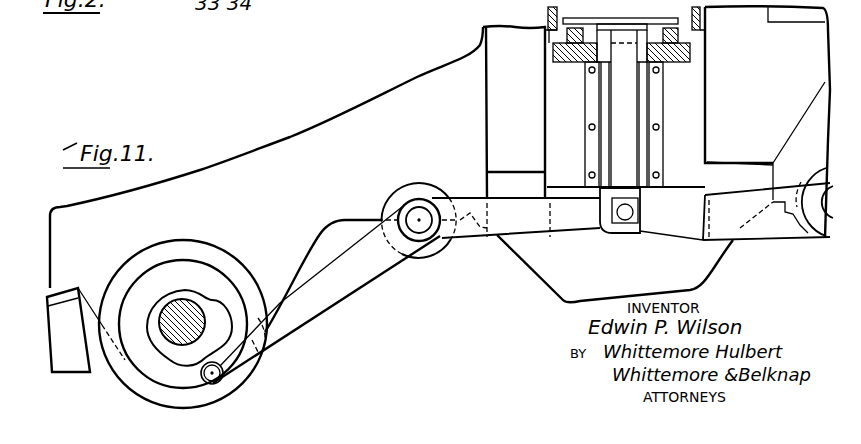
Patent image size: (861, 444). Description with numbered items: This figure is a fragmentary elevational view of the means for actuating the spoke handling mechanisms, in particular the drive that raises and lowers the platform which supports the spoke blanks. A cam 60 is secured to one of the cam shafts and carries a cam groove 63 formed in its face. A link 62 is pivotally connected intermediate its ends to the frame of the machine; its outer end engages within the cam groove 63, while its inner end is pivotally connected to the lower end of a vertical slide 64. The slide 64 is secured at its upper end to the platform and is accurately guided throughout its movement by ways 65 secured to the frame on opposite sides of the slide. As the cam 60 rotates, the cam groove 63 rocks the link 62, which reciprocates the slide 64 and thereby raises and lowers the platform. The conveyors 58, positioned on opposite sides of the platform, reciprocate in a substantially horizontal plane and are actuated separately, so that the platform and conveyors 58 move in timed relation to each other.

The conveyors 58 is at (557, 47).
The cam 60 is at (231, 260).
The link 62 is at (372, 273).
The cam groove 63 is at (244, 330).
The vertical slide 64 is at (623, 128).
The ways 65 is at (645, 138).